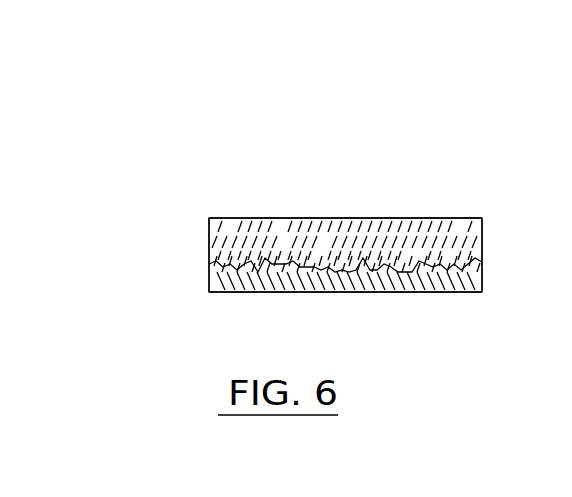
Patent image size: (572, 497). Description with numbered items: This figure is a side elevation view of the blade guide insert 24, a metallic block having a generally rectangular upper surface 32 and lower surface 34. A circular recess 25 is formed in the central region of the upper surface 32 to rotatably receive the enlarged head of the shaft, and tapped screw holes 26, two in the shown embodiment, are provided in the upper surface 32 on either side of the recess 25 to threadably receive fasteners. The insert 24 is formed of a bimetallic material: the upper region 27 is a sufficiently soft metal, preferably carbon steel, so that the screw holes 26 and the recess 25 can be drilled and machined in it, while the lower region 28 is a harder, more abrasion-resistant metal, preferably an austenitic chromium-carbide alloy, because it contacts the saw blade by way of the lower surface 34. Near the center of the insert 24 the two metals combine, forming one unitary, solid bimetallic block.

The blade guide insert 24 is at (305, 200).
The circular recess 25 is at (342, 218).
The tapped screw holes 26 is at (287, 168).
The upper region 27 is at (208, 233).
The lower region 28 is at (278, 280).
The upper surface 32 is at (504, 207).
The lower surface 34 is at (441, 292).